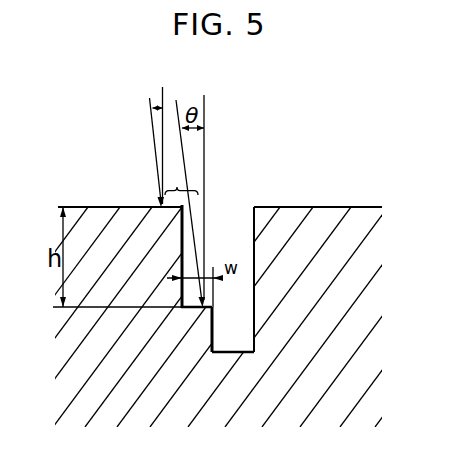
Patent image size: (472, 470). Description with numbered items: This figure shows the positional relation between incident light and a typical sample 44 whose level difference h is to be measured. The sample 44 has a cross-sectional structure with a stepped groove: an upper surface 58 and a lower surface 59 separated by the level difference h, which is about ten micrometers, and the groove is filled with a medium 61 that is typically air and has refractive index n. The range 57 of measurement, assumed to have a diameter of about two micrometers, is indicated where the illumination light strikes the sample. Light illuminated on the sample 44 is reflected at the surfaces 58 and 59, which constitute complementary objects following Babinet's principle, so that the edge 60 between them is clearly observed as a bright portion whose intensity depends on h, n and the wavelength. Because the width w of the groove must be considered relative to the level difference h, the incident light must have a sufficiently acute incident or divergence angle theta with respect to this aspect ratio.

The sample 44 is at (295, 220).
The range of measurement 57 is at (177, 186).
The surface 58 is at (198, 195).
The surface 59 is at (187, 307).
The edge 60 is at (188, 208).
The medium 61 is at (245, 212).